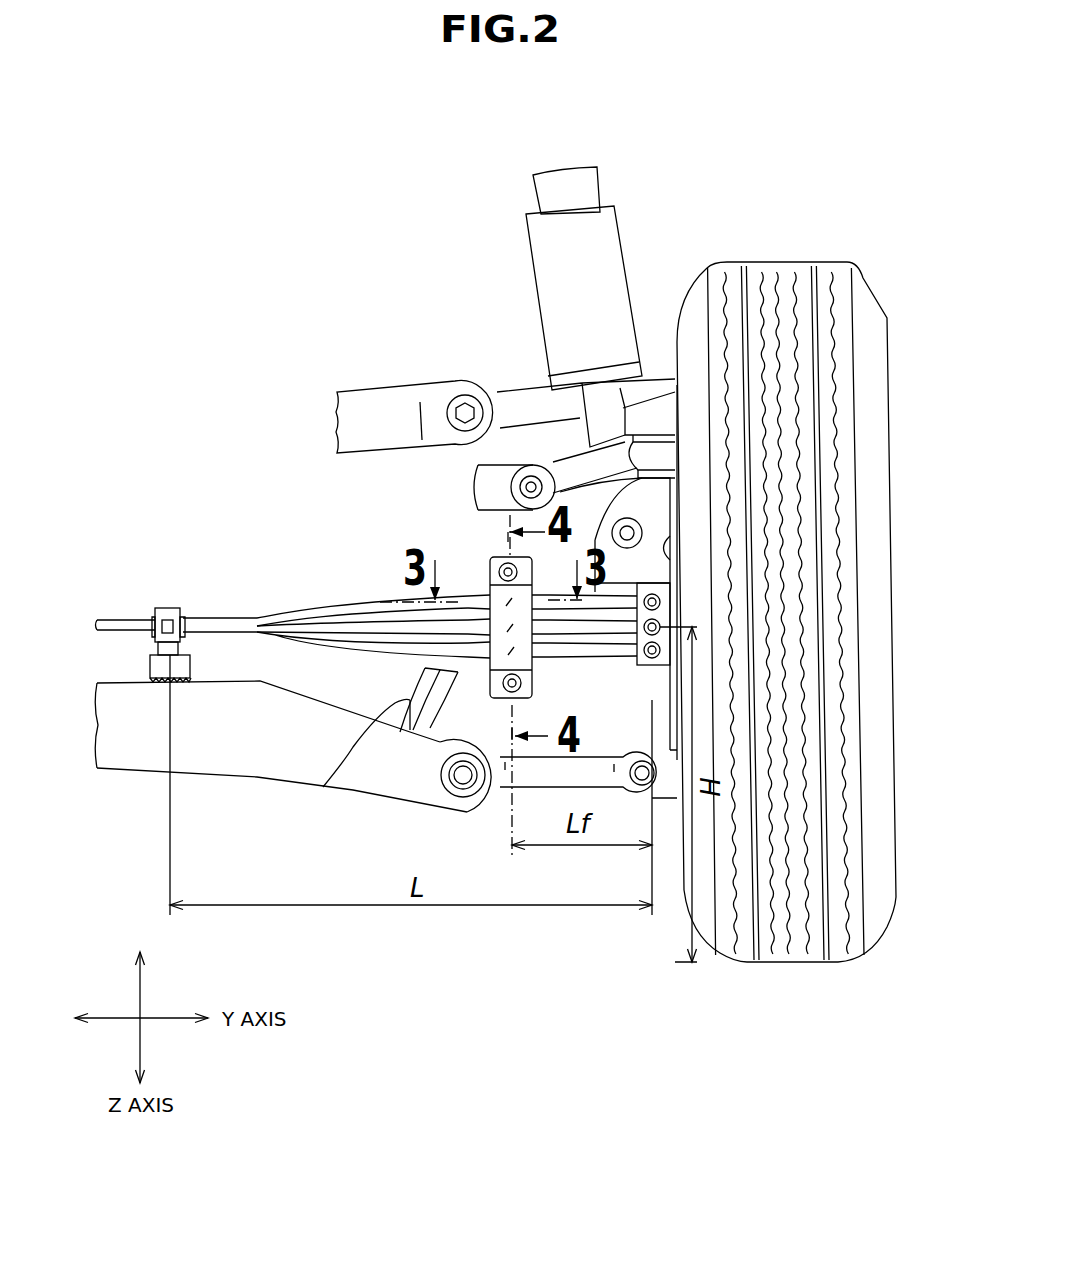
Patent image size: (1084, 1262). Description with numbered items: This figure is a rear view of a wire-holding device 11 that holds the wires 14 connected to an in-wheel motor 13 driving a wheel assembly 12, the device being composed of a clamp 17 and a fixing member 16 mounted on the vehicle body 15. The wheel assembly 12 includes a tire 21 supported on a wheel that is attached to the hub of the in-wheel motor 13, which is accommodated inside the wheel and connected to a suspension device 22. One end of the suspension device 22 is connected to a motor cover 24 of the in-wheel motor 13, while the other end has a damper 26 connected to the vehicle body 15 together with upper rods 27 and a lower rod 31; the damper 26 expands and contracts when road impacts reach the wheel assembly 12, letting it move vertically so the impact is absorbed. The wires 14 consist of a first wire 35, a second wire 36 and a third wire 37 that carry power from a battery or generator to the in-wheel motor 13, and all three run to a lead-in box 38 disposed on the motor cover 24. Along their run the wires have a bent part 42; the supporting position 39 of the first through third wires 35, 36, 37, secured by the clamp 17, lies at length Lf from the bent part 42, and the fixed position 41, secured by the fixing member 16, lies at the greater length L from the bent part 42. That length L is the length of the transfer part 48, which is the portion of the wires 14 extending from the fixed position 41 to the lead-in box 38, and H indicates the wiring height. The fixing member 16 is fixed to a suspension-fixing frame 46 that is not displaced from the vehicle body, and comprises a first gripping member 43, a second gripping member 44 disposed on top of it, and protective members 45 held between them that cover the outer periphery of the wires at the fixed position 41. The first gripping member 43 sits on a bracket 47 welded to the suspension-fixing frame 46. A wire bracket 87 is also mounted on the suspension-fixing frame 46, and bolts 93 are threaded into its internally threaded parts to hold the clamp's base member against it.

The wire-holding device 11 is at (267, 512).
The wheel assembly 12 is at (787, 529).
The in-wheel motor 13 is at (660, 515).
The wires 14 is at (125, 605).
The vehicle body 15 is at (218, 216).
The fixing member 16 is at (191, 591).
The clamp 17 is at (492, 553).
The tire 21 is at (862, 290).
The suspension device 22 is at (451, 344).
The motor cover 24 is at (658, 548).
The damper 26 is at (628, 190).
The upper rods 27 is at (527, 463).
The lower rod 31 is at (592, 758).
The first wire 35 is at (372, 596).
The second wire 36 is at (345, 618).
The third wire 37 is at (353, 650).
The lead-in box 38 is at (657, 662).
The supporting position 39 is at (433, 727).
The fixed position 41 is at (168, 607).
The bent part 42 is at (590, 627).
The first gripping member 43 is at (150, 645).
The second gripping member 44 is at (97, 627).
The protective members 45 is at (188, 622).
The suspension-fixing frame 46 is at (135, 772).
The bracket 47 is at (190, 668).
The transfer part 48 is at (400, 643).
The wire bracket 87 is at (345, 765).
The bolts 93 is at (492, 556).